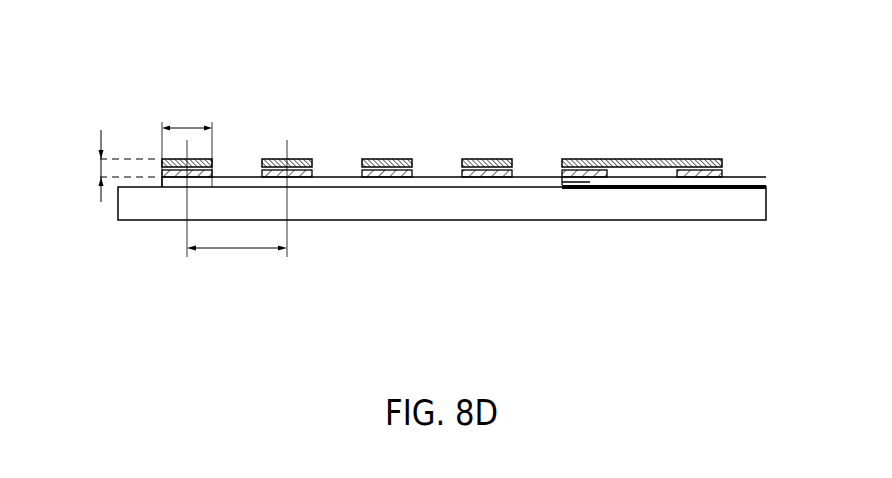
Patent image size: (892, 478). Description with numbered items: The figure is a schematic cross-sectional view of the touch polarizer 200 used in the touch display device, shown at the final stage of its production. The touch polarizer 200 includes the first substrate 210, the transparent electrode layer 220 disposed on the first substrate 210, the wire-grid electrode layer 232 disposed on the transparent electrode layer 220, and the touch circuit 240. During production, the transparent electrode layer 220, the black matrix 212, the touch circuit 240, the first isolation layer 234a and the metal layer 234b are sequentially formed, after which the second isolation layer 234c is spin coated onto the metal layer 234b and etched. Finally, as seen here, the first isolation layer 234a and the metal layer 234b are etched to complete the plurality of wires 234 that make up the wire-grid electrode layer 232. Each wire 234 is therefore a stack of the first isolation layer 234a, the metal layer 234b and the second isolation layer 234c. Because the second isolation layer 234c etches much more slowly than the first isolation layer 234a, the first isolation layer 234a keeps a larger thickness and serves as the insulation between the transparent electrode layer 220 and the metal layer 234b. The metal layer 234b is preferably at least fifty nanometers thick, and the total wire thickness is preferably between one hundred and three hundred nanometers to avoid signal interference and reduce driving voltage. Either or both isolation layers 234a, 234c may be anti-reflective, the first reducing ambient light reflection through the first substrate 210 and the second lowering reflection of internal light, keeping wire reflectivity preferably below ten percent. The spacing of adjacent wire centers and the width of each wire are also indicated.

The touch polarizer 200 is at (165, 51).
The first substrate 210 is at (125, 203).
The black matrix 212 is at (707, 189).
The transparent electrode layer 220 is at (442, 182).
The wire-grid electrode layer 232 is at (731, 165).
The wires 234 is at (440, 102).
The first isolation layer 234a is at (410, 158).
The metal layer 234b is at (386, 170).
The second isolation layer 234c is at (370, 158).
The touch circuit 240 is at (650, 182).